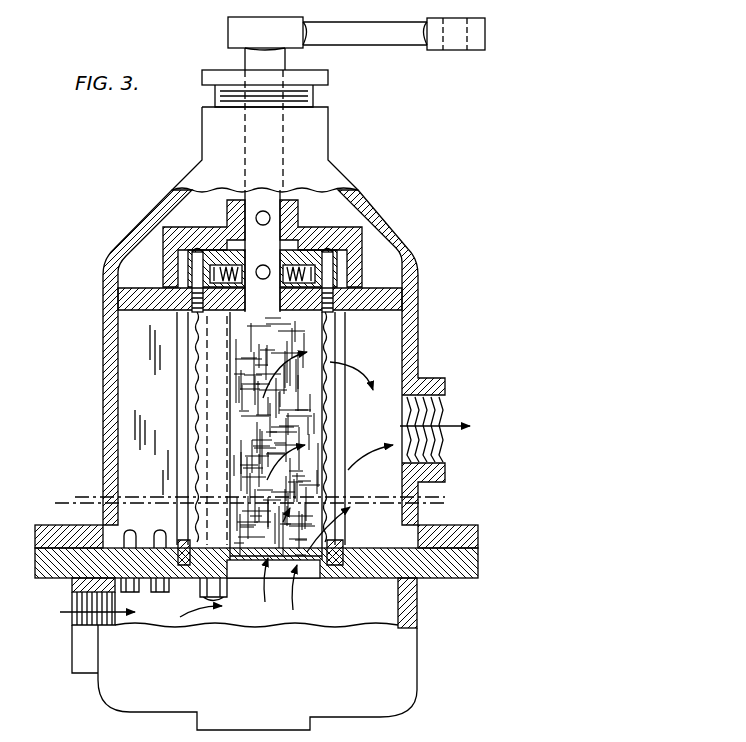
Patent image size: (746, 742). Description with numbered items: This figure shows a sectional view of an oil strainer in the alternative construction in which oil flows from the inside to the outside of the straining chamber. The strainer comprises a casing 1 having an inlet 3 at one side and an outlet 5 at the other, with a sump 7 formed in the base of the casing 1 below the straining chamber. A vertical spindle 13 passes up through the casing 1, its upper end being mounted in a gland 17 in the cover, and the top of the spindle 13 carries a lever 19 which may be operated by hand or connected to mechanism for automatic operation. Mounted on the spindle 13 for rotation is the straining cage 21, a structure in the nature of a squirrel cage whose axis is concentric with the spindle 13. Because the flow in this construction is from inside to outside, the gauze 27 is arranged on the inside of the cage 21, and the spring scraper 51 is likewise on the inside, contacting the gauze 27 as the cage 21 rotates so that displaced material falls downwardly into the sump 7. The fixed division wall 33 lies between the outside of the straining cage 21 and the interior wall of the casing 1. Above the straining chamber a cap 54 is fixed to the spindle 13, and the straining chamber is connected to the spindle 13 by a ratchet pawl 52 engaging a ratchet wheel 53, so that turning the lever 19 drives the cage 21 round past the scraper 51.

The casing 1 is at (115, 350).
The inlet 3 is at (88, 603).
The outlet 5 is at (435, 411).
The sump 7 is at (375, 613).
The spindle 13 is at (262, 207).
The gland 17 is at (313, 99).
The lever 19 is at (395, 33).
The cage 21 is at (345, 340).
The gauze 27 is at (325, 400).
The division wall 33 is at (138, 388).
The spring scraper 51 is at (205, 445).
The ratchet pawl 52 is at (235, 240).
The ratchet wheel 53 is at (323, 255).
The cap 54 is at (367, 258).